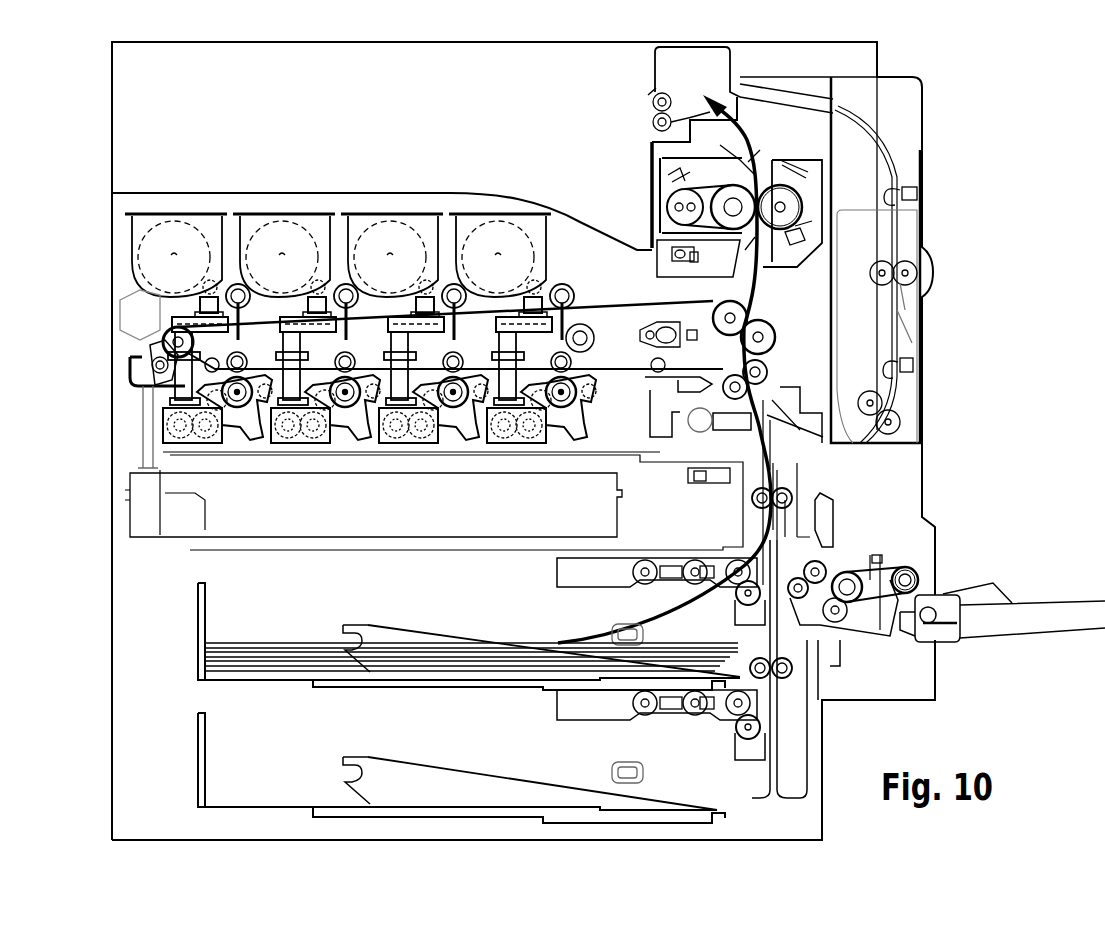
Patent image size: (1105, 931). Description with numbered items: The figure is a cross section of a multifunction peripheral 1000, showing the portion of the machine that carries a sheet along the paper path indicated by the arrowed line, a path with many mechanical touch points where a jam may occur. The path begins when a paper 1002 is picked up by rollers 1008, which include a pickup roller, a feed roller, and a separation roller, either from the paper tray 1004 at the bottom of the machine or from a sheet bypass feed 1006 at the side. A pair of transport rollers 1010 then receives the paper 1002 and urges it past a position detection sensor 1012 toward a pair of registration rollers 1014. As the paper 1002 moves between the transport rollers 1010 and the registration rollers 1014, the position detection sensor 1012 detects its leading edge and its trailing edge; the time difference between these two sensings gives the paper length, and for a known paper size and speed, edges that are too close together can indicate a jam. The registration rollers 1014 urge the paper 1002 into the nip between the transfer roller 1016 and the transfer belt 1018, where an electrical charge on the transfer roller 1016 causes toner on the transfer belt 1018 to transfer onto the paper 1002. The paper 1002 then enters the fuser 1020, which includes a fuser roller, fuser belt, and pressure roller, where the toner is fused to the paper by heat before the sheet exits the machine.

The image forming device 1000 is at (1000, 98).
The paper 1002 is at (313, 645).
The paper tray 1004 is at (198, 640).
The sheet bypass feed 1006 is at (928, 570).
The rollers 1008 is at (764, 604).
The transport rollers 1010 is at (742, 492).
The position detection sensor 1012 is at (698, 410).
The registration rollers 1014 is at (792, 378).
The transfer roller 1016 is at (778, 336).
The transfer belt 1018 is at (625, 303).
The fuser 1020 is at (815, 177).